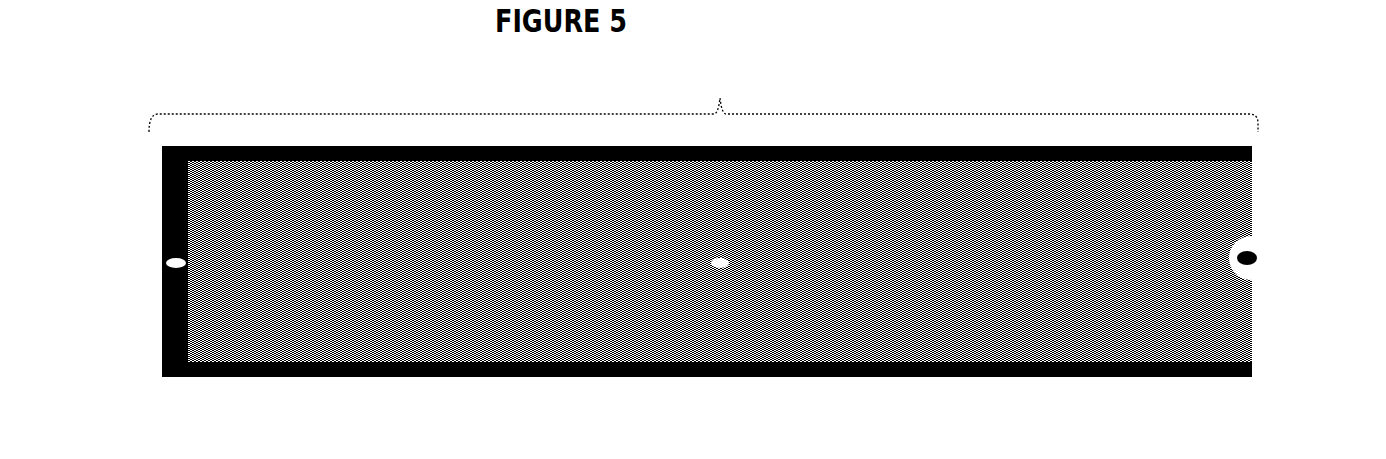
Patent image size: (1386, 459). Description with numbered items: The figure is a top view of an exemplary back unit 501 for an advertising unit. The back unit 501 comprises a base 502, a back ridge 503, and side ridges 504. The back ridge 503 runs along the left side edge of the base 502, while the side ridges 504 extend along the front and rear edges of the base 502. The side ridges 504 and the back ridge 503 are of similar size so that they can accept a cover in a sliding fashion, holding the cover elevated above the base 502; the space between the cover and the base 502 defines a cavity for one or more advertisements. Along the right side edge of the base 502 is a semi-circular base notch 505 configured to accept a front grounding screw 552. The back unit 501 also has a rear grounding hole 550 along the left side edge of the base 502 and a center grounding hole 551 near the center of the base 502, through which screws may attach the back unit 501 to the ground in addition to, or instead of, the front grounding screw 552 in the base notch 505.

The back unit 501 is at (703, 97).
The base 502 is at (549, 286).
The back ridge 503 is at (158, 332).
The side ridges 504 is at (1259, 147).
The base notch 505 is at (1259, 274).
The rear grounding hole 550 is at (156, 260).
The center grounding hole 551 is at (723, 274).
The front grounding screw 552 is at (1261, 257).